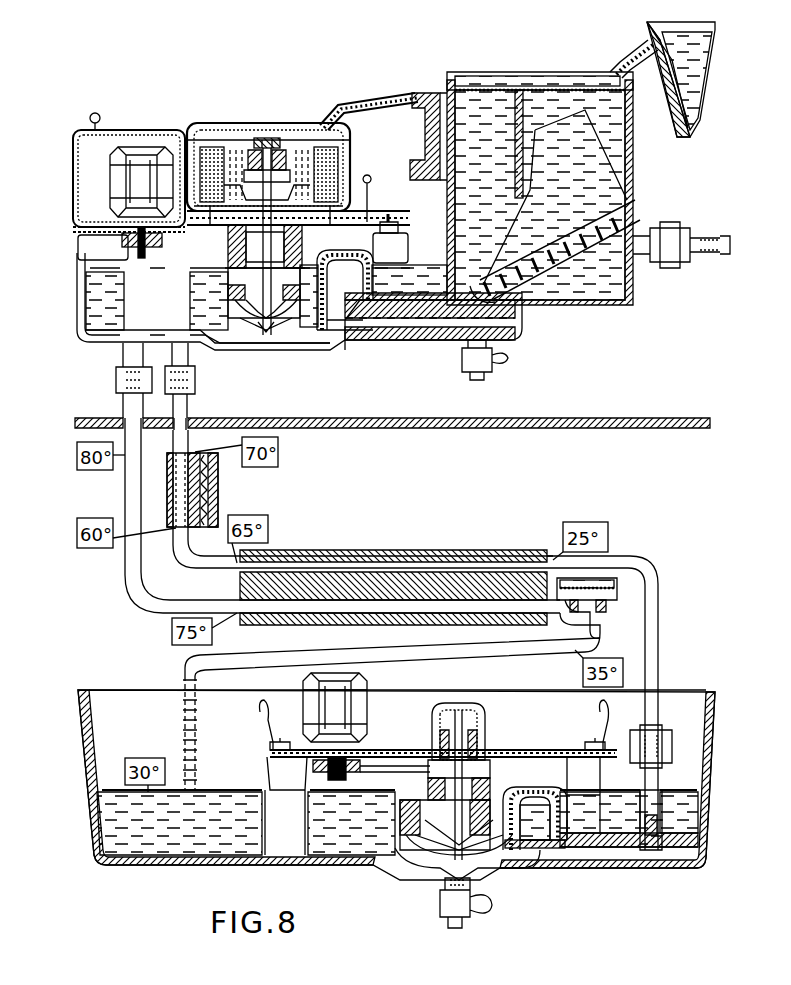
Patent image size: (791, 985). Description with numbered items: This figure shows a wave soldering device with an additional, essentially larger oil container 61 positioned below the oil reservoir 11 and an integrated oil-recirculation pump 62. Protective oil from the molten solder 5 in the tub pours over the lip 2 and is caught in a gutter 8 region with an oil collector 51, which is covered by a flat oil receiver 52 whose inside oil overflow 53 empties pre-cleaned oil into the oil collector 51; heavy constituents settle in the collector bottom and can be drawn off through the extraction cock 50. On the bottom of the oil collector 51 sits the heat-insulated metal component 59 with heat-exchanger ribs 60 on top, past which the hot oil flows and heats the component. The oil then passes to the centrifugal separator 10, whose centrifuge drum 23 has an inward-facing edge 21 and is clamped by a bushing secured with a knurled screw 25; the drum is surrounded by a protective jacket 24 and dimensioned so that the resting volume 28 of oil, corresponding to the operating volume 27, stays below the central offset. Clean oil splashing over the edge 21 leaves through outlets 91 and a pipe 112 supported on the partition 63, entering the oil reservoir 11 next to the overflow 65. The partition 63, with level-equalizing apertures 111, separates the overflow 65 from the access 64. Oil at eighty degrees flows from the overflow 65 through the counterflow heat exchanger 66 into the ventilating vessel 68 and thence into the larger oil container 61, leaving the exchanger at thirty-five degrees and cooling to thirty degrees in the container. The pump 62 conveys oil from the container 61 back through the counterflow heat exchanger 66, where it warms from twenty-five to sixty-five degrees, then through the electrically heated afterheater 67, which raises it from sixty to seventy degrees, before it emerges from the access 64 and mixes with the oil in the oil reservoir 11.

The pouring lip 2 is at (630, 48).
The molten solder 5 is at (707, 123).
The gutter 8 is at (347, 103).
The centrifugal separator 10 is at (212, 98).
The oil reservoir 11 is at (312, 352).
The inward-facing edge 21 is at (192, 128).
The centrifuge drum 23 is at (348, 160).
The protective jacket 24 is at (256, 150).
The knurled screw 25 is at (268, 138).
The operating volume 27 is at (178, 128).
The resting volume 28 is at (246, 180).
The extraction cock 50 is at (508, 352).
The oil collector 51 is at (634, 205).
The oil receiver 52 is at (528, 82).
The oil overflow 53 is at (603, 66).
The metal component 59 is at (555, 258).
The heat-exchanger ribs 60 is at (632, 172).
The oil container 61 is at (700, 697).
The pump 62 is at (509, 792).
The partition 63 is at (400, 420).
The access 64 is at (190, 364).
The overflow 65 is at (130, 356).
The counterflow heat exchanger 66 is at (382, 552).
The afterheater 67 is at (220, 488).
The ventilating vessel 68 is at (612, 602).
The outlet 91 is at (298, 250).
The level-equalizing apertures 111 is at (193, 417).
The pipe 112 is at (125, 257).